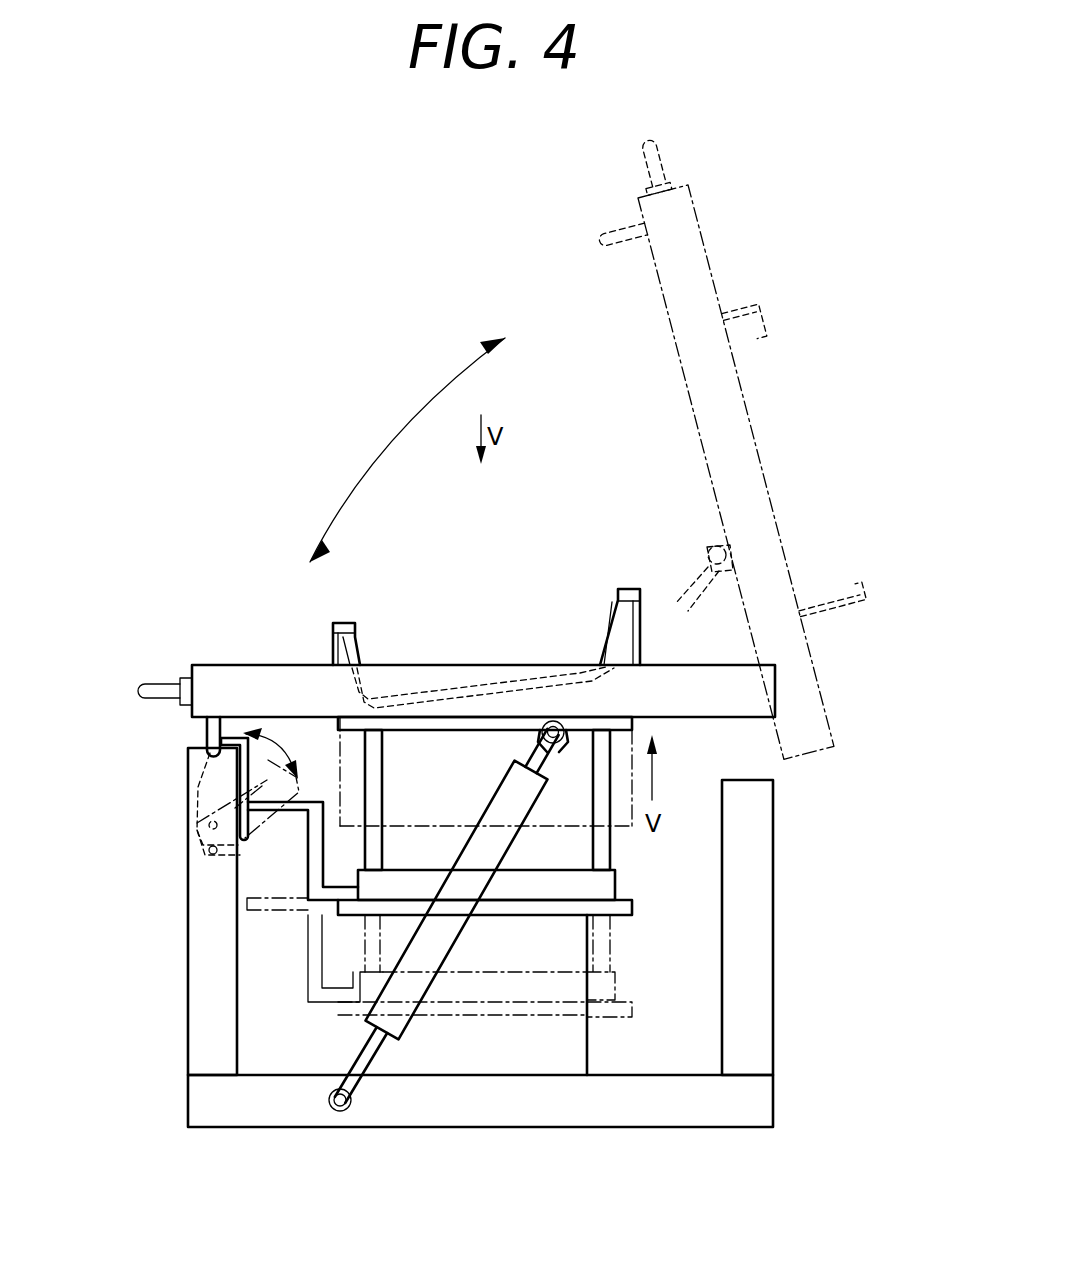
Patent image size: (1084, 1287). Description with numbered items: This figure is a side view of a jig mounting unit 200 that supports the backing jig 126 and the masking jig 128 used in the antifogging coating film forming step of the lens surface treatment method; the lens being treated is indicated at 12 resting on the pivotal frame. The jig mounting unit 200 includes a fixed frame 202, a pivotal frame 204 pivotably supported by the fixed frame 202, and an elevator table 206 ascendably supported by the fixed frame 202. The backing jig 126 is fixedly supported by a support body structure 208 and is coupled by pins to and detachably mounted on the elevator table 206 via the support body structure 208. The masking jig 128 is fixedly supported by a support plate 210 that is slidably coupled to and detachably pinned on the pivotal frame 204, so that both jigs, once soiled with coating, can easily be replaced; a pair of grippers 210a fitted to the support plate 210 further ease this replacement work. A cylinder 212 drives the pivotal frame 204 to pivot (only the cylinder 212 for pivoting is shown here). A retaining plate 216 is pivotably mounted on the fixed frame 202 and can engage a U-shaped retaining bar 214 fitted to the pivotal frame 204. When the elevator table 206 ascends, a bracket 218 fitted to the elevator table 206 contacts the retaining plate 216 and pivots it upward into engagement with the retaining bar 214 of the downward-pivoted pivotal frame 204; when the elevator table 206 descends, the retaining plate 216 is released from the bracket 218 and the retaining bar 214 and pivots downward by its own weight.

The substrate 12 is at (587, 640).
The backing jig 126 is at (626, 650).
The masking jig 128 is at (763, 324).
The jig mounting unit 200 is at (305, 338).
The fixed frame 202 is at (758, 1105).
The pivotal frame 204 is at (417, 684).
The elevator table 206 is at (625, 908).
The support body structure 208 is at (611, 849).
The support plate 210 is at (182, 678).
The grippers 210a is at (150, 686).
The cylinder 212 is at (485, 806).
The U-shaped retaining bar 214 is at (206, 731).
The retaining plate 216 is at (232, 736).
The bracket 218 is at (316, 826).